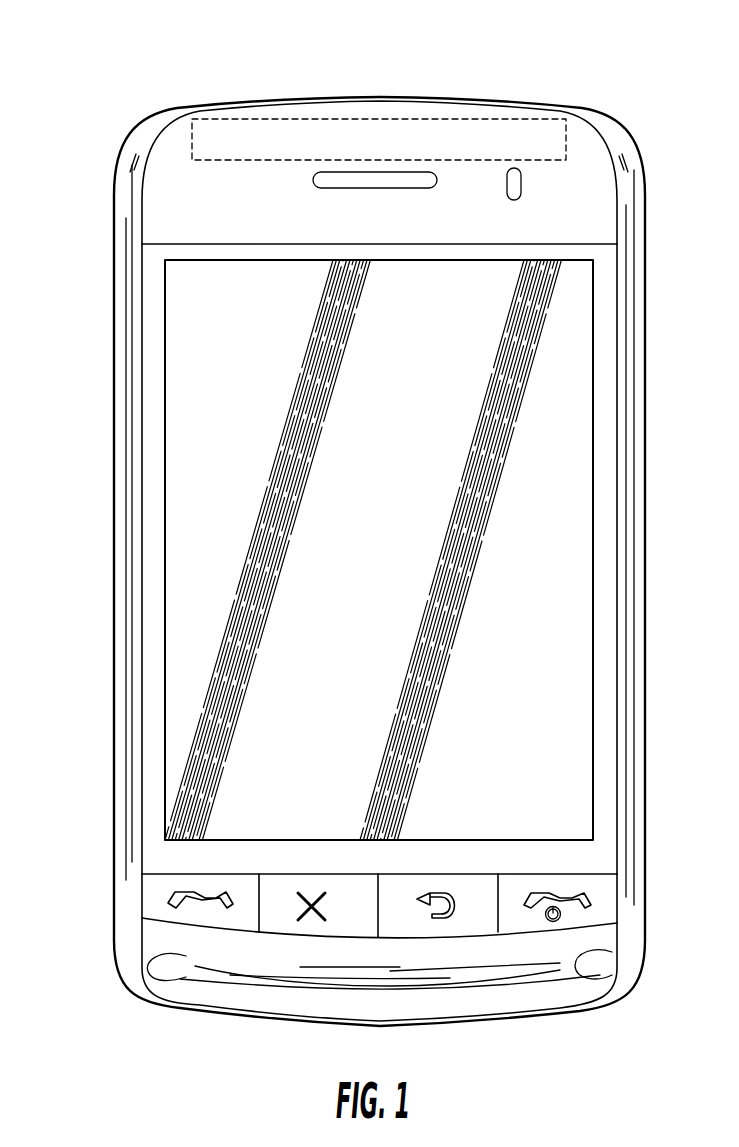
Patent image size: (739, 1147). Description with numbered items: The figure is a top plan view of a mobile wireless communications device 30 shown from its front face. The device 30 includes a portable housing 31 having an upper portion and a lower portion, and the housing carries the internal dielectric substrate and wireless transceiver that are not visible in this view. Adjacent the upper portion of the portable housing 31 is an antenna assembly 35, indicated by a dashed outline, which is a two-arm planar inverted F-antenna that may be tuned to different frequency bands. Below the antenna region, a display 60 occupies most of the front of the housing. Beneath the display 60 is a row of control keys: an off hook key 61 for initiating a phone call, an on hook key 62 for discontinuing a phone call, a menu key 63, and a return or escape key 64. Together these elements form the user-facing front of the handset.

The mobile wireless communications device 30 is at (592, 64).
The portable housing 31 is at (113, 342).
The antenna assembly 35 is at (240, 116).
The display 60 is at (551, 568).
The off hook key 61 is at (158, 906).
The on hook key 62 is at (583, 913).
The menu key 63 is at (311, 930).
The return or escape key 64 is at (430, 930).